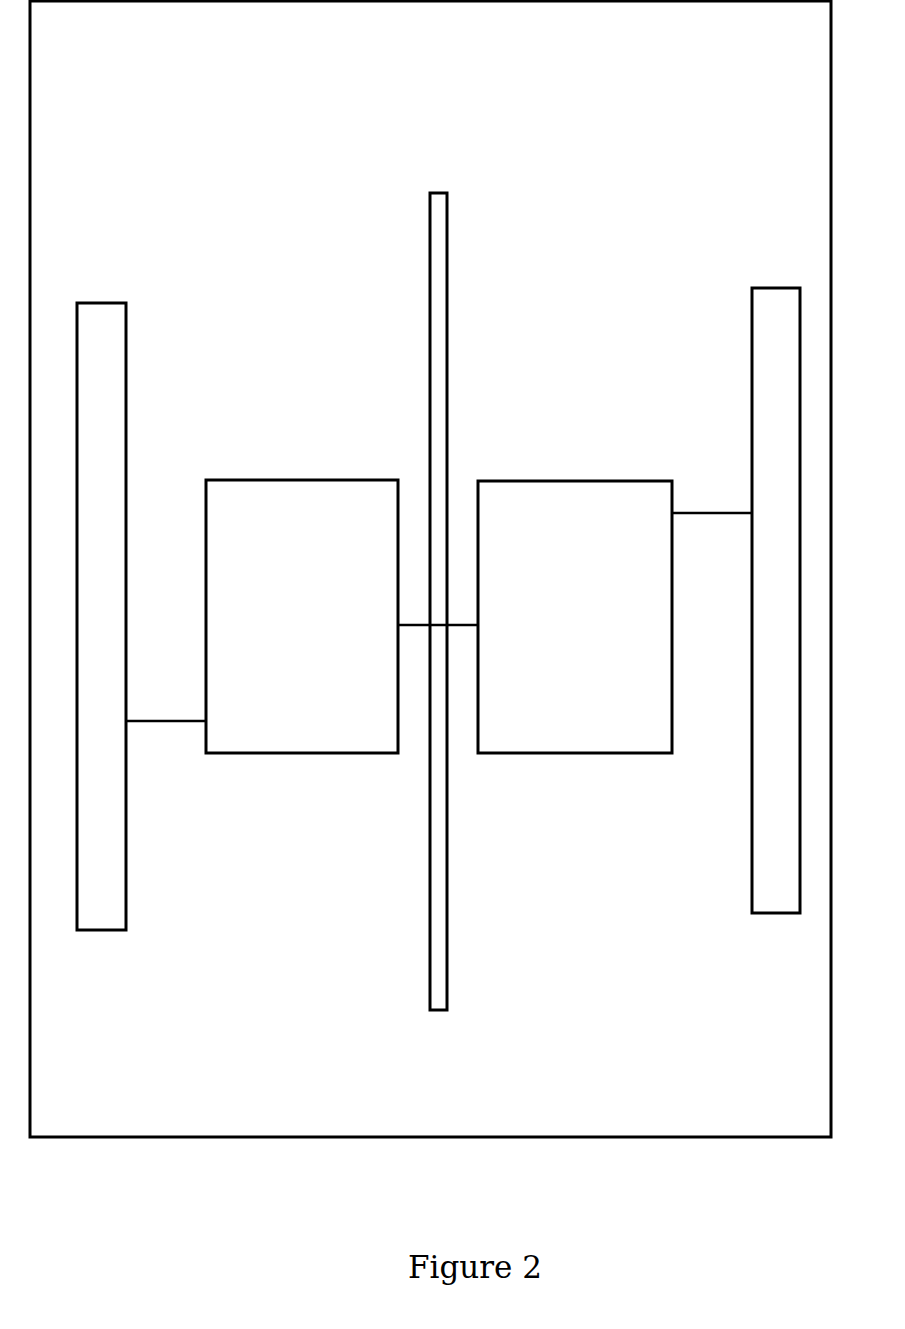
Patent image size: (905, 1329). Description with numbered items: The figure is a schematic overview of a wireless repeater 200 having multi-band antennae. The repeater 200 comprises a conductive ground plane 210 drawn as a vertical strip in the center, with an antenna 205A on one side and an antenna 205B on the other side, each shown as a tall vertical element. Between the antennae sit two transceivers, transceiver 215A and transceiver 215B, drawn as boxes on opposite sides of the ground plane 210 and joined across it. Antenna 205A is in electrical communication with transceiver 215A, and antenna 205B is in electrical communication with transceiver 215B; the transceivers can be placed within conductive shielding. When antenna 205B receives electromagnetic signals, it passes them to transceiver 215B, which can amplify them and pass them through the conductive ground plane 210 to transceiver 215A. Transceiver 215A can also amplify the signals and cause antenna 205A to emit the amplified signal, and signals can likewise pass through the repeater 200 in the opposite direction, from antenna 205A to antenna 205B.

The repeater 200 is at (93, 71).
The antenna 205A is at (146, 551).
The antenna 205B is at (710, 541).
The ground plane 210 is at (463, 535).
The transceiver 215A is at (271, 553).
The transceiver 215B is at (544, 553).